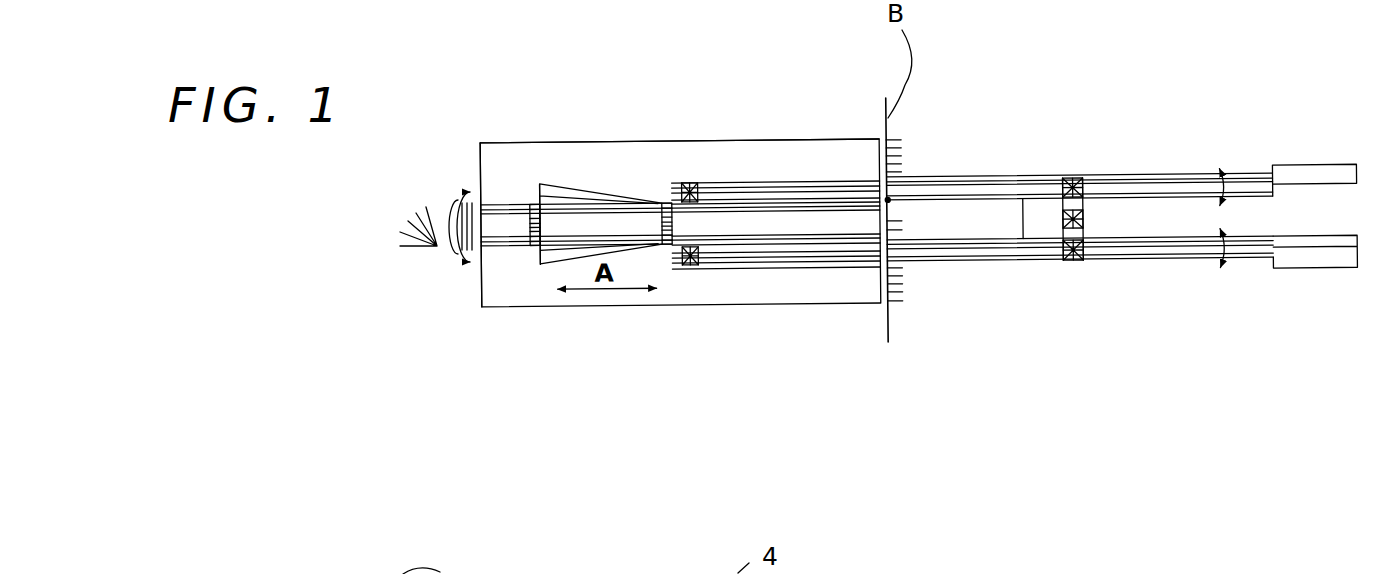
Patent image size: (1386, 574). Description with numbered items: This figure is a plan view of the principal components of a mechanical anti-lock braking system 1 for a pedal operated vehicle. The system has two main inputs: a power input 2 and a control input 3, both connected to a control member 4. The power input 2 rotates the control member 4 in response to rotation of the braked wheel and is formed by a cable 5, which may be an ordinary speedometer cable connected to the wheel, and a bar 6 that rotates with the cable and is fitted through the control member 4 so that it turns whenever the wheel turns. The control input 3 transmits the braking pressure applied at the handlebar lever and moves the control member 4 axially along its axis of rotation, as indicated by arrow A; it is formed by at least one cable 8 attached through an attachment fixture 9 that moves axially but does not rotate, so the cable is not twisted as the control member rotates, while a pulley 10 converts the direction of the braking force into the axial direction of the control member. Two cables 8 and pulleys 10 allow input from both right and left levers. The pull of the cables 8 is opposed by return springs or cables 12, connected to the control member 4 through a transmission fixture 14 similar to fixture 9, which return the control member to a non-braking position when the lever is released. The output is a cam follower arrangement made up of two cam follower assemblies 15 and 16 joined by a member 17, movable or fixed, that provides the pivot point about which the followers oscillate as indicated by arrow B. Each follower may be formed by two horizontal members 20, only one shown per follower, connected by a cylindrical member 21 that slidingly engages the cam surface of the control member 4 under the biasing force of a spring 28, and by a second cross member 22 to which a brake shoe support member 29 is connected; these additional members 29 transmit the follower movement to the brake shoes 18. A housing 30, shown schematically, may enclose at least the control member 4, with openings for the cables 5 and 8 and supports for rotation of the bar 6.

The mechanical anti-lock braking system 1 is at (1147, 360).
The power input 2 is at (440, 278).
The control input 3 is at (860, 115).
The control member 4 is at (547, 257).
The cable 5 is at (418, 243).
The bar 6 is at (503, 227).
The cable 8 is at (889, 322).
The attachment fixture 9 is at (669, 240).
The pulley 10 is at (889, 200).
The springs or cables 12 is at (508, 203).
The transmission fixture 14 is at (533, 203).
The cam follower assembly 15 is at (809, 173).
The cam follower assembly 16 is at (786, 283).
The member 17 is at (1058, 188).
The brake shoes 18 is at (1336, 176).
The horizontal members 20 is at (843, 253).
The cylindrical member 21 is at (696, 249).
The second cross member 22 is at (1083, 197).
The spring 28 is at (1023, 205).
The brake shoe support member 29 is at (1143, 252).
The housing 30 is at (702, 305).